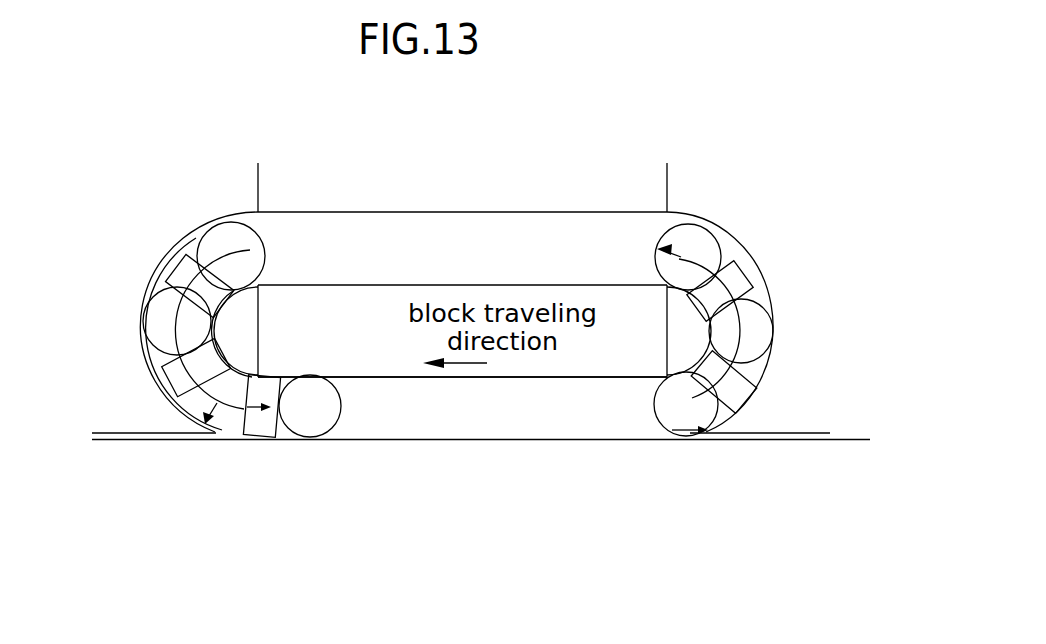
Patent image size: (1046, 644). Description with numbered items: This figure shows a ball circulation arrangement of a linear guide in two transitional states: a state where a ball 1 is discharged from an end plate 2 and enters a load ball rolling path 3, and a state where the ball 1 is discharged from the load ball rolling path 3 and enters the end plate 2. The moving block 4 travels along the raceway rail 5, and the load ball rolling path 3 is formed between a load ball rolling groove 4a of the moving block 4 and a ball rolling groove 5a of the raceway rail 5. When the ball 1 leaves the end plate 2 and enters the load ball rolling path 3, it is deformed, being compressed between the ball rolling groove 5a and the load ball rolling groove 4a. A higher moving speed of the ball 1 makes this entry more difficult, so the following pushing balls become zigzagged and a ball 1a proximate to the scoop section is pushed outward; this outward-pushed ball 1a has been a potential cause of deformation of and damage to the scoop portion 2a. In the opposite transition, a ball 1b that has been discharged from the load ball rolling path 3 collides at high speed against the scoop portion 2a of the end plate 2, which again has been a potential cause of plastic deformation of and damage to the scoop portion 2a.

The ball 1 is at (702, 240).
The ball proximate to a scoop section 1a is at (232, 413).
The ball discharged from the load ball rolling path 1b is at (665, 407).
The end plate 2 is at (140, 413).
The scoop portion 2a is at (177, 417).
The load ball rolling path 3 is at (440, 423).
The moving block 4 is at (340, 300).
The load ball rolling groove 4a is at (360, 382).
The raceway rail 5 is at (522, 483).
The ball rolling groove 5a is at (377, 427).